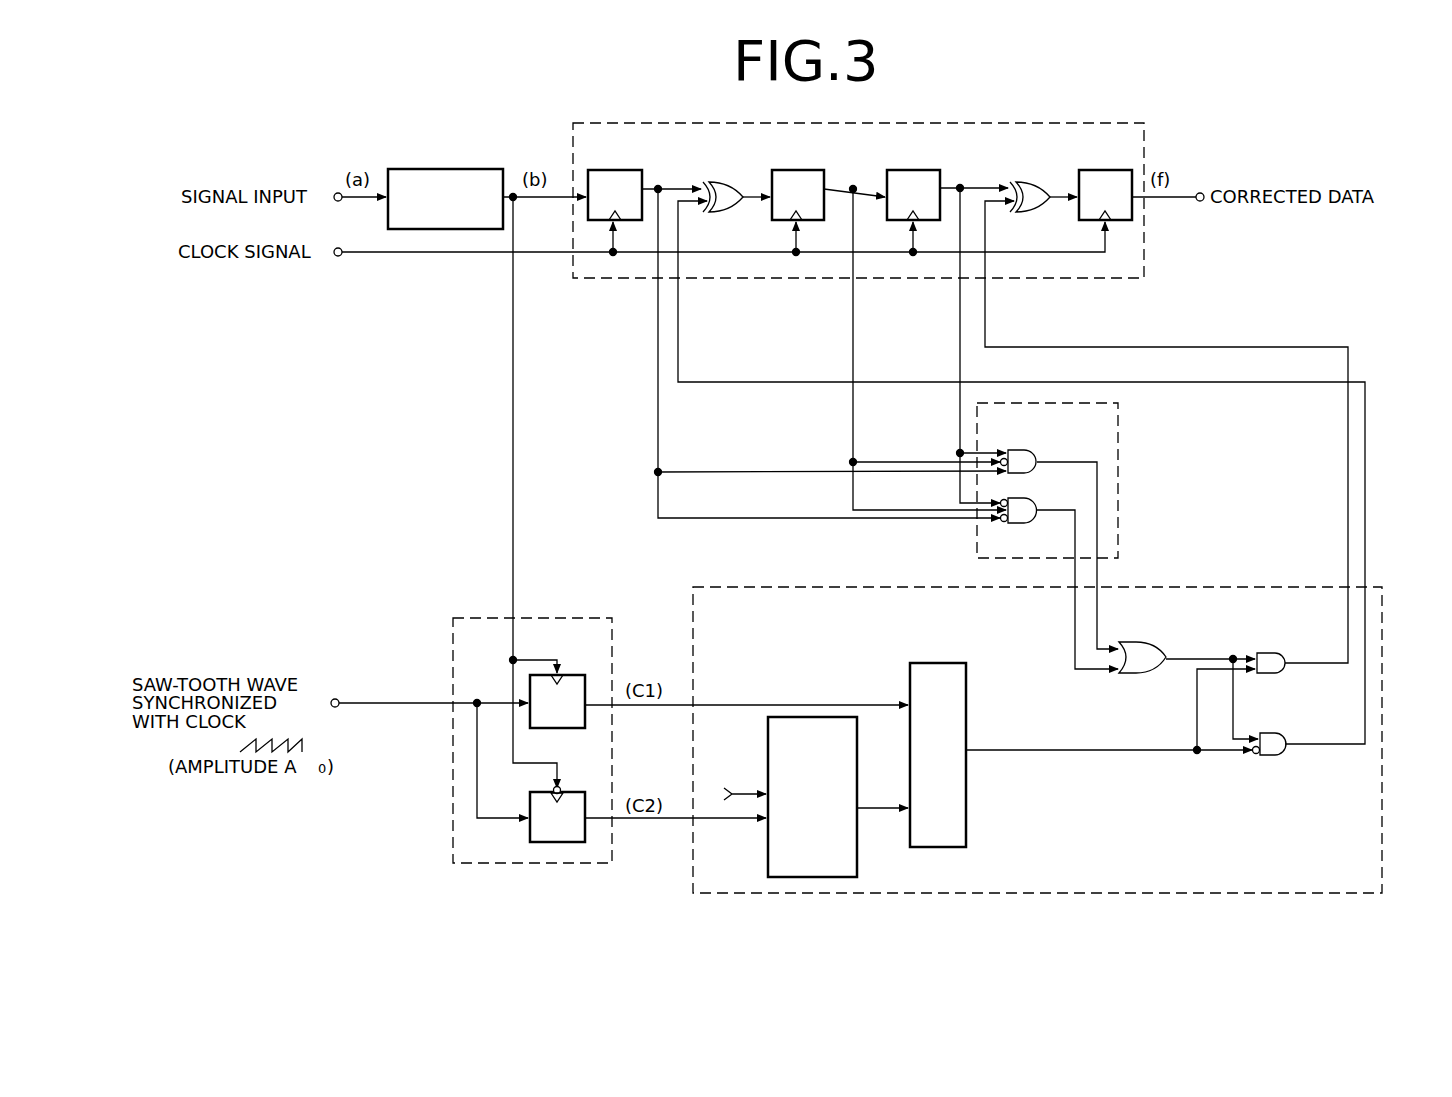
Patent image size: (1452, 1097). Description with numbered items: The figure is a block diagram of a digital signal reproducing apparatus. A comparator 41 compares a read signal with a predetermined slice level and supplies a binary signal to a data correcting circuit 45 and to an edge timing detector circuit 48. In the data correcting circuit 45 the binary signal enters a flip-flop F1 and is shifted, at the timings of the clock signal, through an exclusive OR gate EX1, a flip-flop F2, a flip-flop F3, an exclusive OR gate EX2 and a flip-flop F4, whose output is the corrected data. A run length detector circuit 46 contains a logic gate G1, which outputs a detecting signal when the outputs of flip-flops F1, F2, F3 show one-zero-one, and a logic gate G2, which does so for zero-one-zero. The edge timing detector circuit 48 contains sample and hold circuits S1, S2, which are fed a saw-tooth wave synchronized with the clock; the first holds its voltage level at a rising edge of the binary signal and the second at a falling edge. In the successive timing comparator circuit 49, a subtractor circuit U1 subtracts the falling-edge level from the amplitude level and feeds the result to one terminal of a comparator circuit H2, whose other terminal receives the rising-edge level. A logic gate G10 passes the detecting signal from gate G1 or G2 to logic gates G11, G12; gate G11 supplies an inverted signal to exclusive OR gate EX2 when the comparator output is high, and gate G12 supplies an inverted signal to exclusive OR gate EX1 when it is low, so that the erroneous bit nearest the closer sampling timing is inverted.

The comparator 41 is at (398, 128).
The data correcting circuit 45 is at (1146, 140).
The run length detector circuit 46 is at (1119, 442).
The edge timing detector circuit 48 is at (580, 617).
The successive timing comparator circuit 49 is at (1272, 587).
The flip-flop F1 is at (623, 168).
The flip-flop F2 is at (806, 168).
The flip-flop F3 is at (923, 168).
The flip-flop F4 is at (1111, 168).
The exclusive OR gate EX1 is at (720, 178).
The exclusive OR gate EX2 is at (1028, 178).
The logic gate G1 is at (1022, 449).
The logic gate G2 is at (1022, 523).
The logic gate G10 is at (1143, 642).
The logic gate G11 is at (1271, 652).
The logic gate G12 is at (1271, 732).
The sample and hold circuit S1 is at (580, 674).
The sample and hold circuit S2 is at (580, 790).
The subtractor circuit U1 is at (785, 653).
The comparator circuit H2 is at (945, 662).